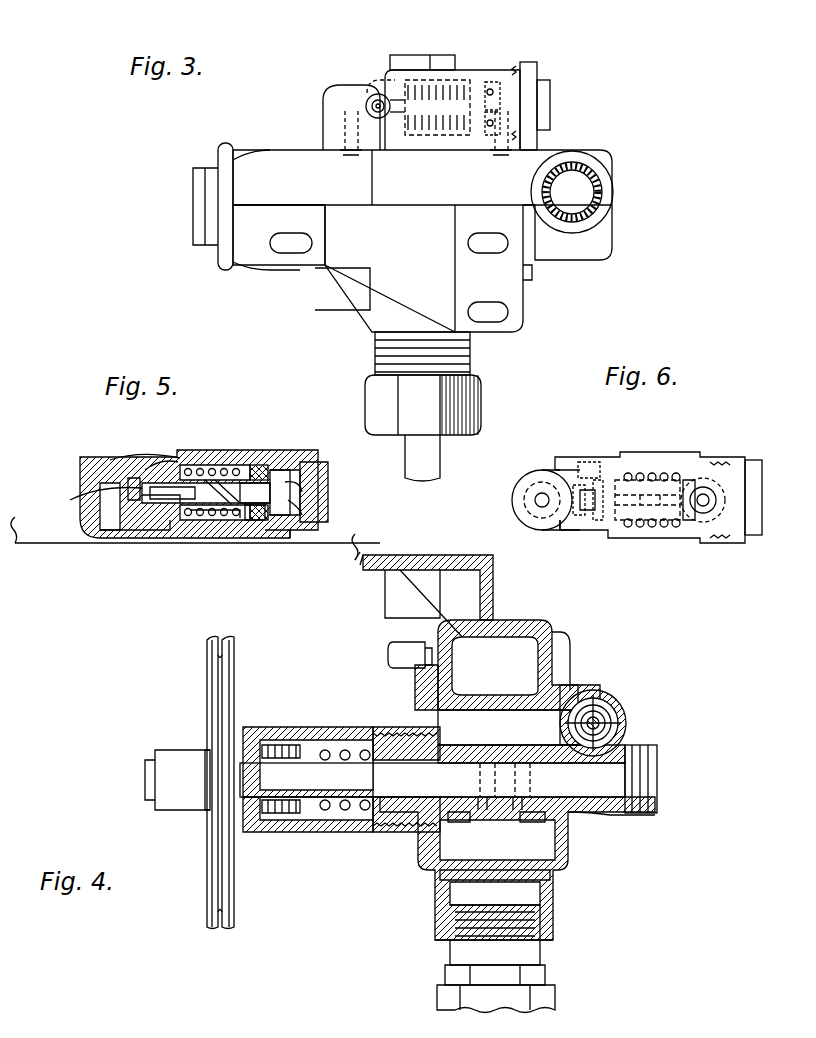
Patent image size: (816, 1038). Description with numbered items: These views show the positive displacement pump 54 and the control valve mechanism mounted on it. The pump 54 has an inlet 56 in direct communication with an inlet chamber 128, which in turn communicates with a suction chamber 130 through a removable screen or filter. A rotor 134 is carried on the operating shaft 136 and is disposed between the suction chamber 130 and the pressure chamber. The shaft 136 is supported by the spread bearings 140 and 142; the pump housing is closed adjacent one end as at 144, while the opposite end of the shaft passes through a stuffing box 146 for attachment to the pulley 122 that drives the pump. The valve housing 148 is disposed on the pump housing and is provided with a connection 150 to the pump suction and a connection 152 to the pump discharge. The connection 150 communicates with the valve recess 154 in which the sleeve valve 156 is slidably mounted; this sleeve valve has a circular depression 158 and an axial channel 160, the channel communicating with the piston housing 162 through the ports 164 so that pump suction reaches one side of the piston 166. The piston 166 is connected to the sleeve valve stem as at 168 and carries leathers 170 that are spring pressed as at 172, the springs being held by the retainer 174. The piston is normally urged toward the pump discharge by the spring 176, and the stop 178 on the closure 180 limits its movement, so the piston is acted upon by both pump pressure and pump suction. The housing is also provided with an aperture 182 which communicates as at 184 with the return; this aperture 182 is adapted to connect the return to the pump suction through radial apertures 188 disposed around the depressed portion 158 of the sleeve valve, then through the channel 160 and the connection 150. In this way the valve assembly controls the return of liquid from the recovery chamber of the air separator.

In FIG. 3, the pump 54 is at (572, 250).
In FIG. 4, the pump 54 is at (553, 637).
In FIG. 4, the inlet 56 is at (542, 955).
In FIG. 4, the pulley 122 is at (225, 678).
In FIG. 4, the inlet chamber 128 is at (530, 890).
In FIG. 4, the suction chamber 130 is at (556, 838).
In FIG. 4, the rotor 134 is at (498, 810).
In FIG. 4, the operating shaft 136 is at (400, 800).
In FIG. 4, the bearing 140 is at (622, 748).
In FIG. 4, the bearing 142 is at (385, 758).
In FIG. 4, the closed end 144 is at (650, 778).
In FIG. 4, the stuffing box 146 is at (333, 822).
In FIG. 3, the valve housing 148 is at (482, 75).
In FIG. 5, the valve housing 148 is at (83, 465).
In FIG. 6, the valve housing 148 is at (672, 467).
In FIG. 4, the valve housing 148 is at (608, 700).
In FIG. 3, the connection to pump suction 150 is at (342, 130).
In FIG. 5, the connection to pump suction 150 is at (80, 495).
In FIG. 6, the connection to pump suction 150 is at (535, 500).
In FIG. 4, the connection to pump suction 150 is at (578, 688).
In FIG. 3, the connection to pump discharge 152 is at (520, 160).
In FIG. 5, the connection to pump discharge 152 is at (290, 535).
In FIG. 5, the valve recess 154 is at (142, 446).
In FIG. 3, the sleeve valve 156 is at (387, 80).
In FIG. 5, the sleeve valve 156 is at (158, 465).
In FIG. 6, the sleeve valve 156 is at (583, 512).
In FIG. 5, the circular depression 158 is at (180, 485).
In FIG. 5, the axial channel 160 is at (165, 505).
In FIG. 5, the piston housing 162 is at (232, 482).
In FIG. 5, the ports 164 is at (205, 520).
In FIG. 3, the piston 166 is at (525, 70).
In FIG. 5, the piston 166 is at (258, 466).
In FIG. 6, the piston 166 is at (695, 478).
In FIG. 5, the sleeve valve stem connection 168 is at (268, 484).
In FIG. 5, the leathers 170 is at (258, 520).
In FIG. 5, the springs 172 is at (305, 505).
In FIG. 5, the retainer 174 is at (300, 490).
In FIG. 3, the spring 176 is at (450, 88).
In FIG. 5, the spring 176 is at (220, 470).
In FIG. 6, the spring 176 is at (630, 475).
In FIG. 5, the stop 178 is at (290, 470).
In FIG. 3, the closure 180 is at (545, 98).
In FIG. 5, the closure 180 is at (318, 470).
In FIG. 6, the closure 180 is at (760, 450).
In FIG. 3, the aperture 182 is at (372, 98).
In FIG. 5, the aperture 182 is at (135, 500).
In FIG. 6, the aperture 182 is at (582, 480).
In FIG. 6, the communication passage 184 is at (602, 465).
In FIG. 5, the radial apertures 188 is at (155, 515).